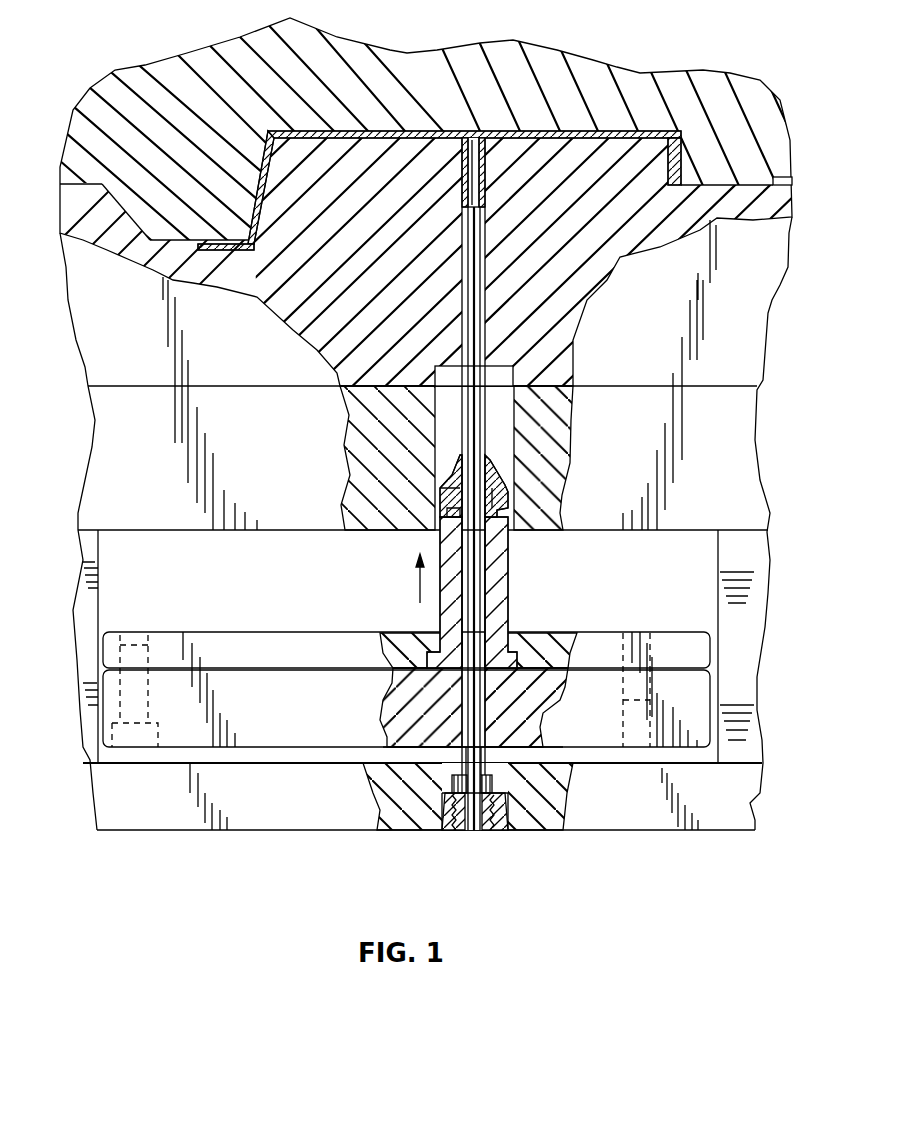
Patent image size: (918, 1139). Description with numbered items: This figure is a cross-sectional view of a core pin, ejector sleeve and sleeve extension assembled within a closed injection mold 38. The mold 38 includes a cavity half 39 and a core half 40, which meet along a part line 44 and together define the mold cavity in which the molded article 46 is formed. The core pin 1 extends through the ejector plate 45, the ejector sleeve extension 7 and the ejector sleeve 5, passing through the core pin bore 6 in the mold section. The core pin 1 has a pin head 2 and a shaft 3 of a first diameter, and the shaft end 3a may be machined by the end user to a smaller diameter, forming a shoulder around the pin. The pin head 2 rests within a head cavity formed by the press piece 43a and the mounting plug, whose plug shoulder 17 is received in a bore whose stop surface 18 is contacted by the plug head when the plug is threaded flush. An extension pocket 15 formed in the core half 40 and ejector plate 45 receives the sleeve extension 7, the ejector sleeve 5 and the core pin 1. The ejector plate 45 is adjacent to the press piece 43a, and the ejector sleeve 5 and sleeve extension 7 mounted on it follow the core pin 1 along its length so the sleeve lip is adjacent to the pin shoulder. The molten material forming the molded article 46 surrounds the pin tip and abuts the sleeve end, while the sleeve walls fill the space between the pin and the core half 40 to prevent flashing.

The core pin 1 is at (470, 712).
The pin head 2 is at (452, 776).
The shaft 3 is at (470, 556).
The shaft end 3a is at (487, 185).
The ejector sleeve 5 is at (497, 507).
The core pin bore 6 is at (500, 776).
The ejector sleeve extension 7 is at (440, 614).
The extension pocket 15 is at (500, 430).
The plug shoulder 17 is at (503, 798).
The stop surface 18 is at (447, 812).
The mold 38 is at (750, 468).
The cavity half 39 is at (97, 112).
The core half 40 is at (112, 493).
The press piece 43a is at (723, 813).
The part line 44 is at (792, 185).
The ejector plate 45 is at (257, 697).
The molded article 46 is at (407, 131).